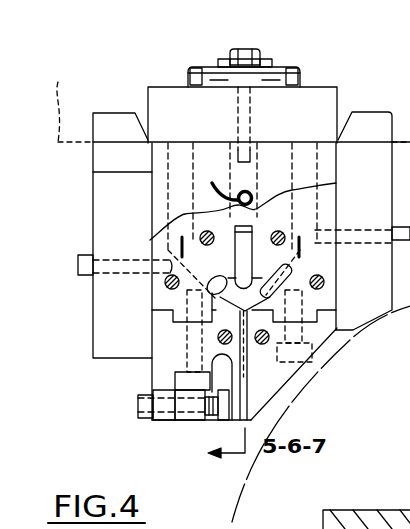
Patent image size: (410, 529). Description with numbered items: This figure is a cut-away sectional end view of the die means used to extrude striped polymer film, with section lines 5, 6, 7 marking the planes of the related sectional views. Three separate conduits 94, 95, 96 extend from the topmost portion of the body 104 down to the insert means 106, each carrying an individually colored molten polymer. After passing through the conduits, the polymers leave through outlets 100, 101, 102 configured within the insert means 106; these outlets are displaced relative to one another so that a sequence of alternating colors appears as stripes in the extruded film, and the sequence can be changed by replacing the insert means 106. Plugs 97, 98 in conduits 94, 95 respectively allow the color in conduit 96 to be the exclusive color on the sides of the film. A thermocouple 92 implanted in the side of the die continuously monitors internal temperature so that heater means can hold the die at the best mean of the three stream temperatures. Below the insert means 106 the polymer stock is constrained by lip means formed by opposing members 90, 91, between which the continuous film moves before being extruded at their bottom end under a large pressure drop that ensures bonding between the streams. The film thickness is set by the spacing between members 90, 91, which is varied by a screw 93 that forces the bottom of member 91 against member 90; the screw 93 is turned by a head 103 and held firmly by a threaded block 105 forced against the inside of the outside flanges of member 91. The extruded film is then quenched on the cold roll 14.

The section line 5 is at (174, 59).
The section line 6 is at (237, 43).
The section line 7 is at (297, 60).
The cold roll 14 is at (243, 487).
The opposing member 90 is at (263, 382).
The opposing member 91 is at (220, 367).
The thermocouple 92 is at (252, 186).
The screw 93 is at (227, 421).
The conduit 94 is at (307, 164).
The conduit 95 is at (243, 182).
The conduit 96 is at (180, 187).
The plug 97 is at (273, 273).
The plug 98 is at (233, 265).
The outlet 100 is at (337, 338).
The outlet 101 is at (290, 292).
The outlet 102 is at (177, 306).
The head 103 is at (138, 407).
The body 104 is at (273, 220).
The threaded block 105 is at (183, 420).
The insert means 106 is at (227, 307).